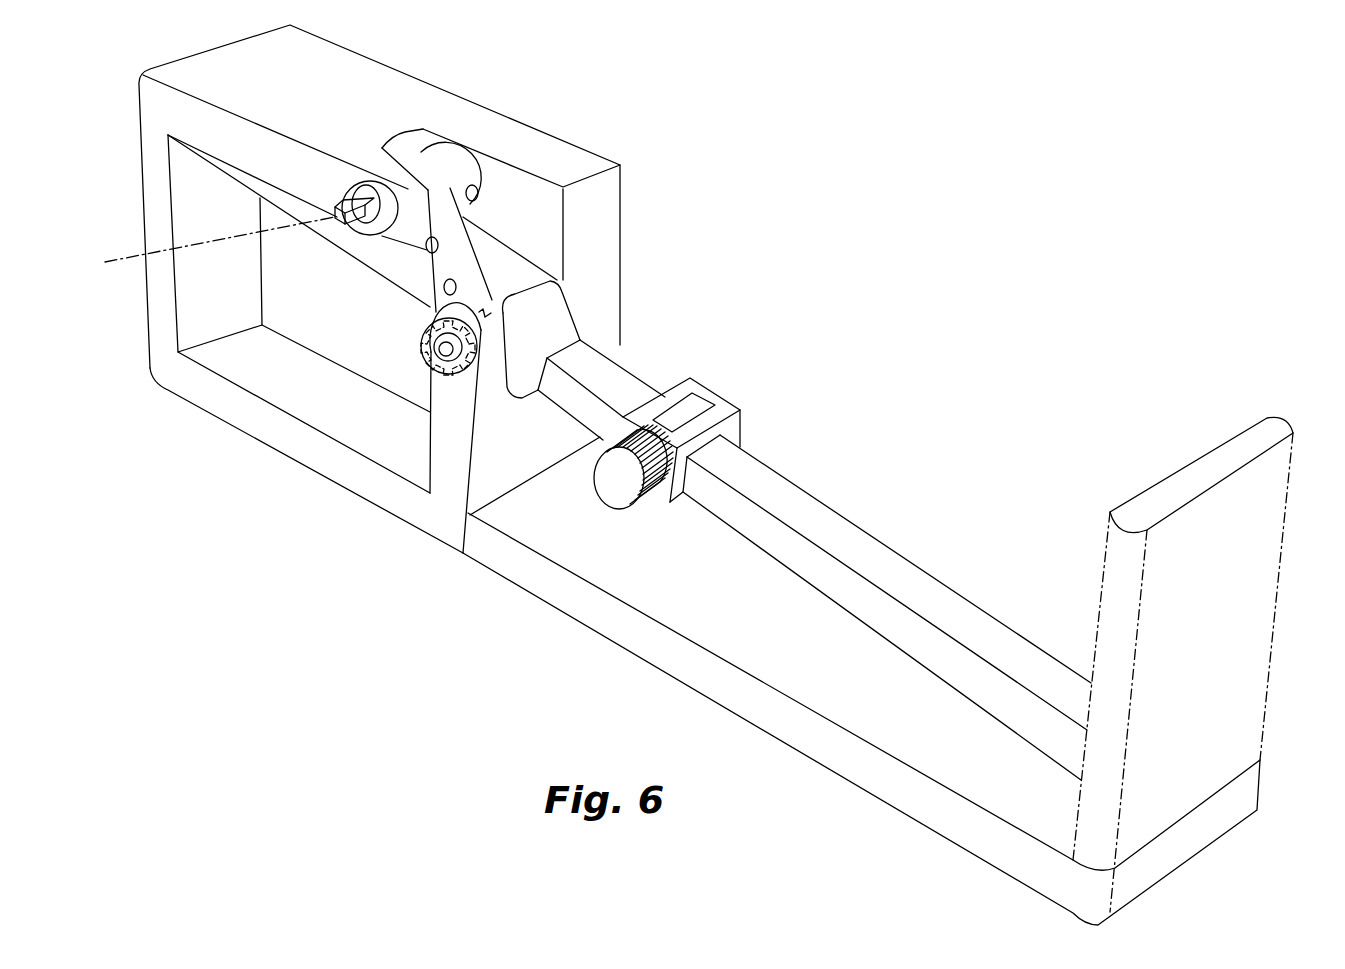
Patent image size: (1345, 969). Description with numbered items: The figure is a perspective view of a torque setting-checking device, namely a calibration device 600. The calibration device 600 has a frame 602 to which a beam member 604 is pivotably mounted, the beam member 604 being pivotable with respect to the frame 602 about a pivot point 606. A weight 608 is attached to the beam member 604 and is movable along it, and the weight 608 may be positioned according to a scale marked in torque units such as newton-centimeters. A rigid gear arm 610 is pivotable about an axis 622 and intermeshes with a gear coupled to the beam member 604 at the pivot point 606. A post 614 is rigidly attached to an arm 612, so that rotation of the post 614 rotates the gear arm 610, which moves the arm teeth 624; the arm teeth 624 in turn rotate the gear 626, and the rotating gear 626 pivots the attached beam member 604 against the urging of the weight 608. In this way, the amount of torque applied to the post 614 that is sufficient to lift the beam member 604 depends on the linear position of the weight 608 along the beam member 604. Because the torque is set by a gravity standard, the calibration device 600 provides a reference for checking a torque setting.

The calibration device 600 is at (1272, 493).
The frame 602 is at (612, 160).
The beam member 604 is at (828, 503).
The pivot point 606 is at (445, 350).
The weight 608 is at (740, 410).
The rigid gear arm 610 is at (463, 247).
The arm 612 is at (417, 173).
The post 614 is at (336, 200).
The axis 622 is at (125, 260).
The arm teeth 624 is at (480, 317).
The gear 626 is at (462, 380).